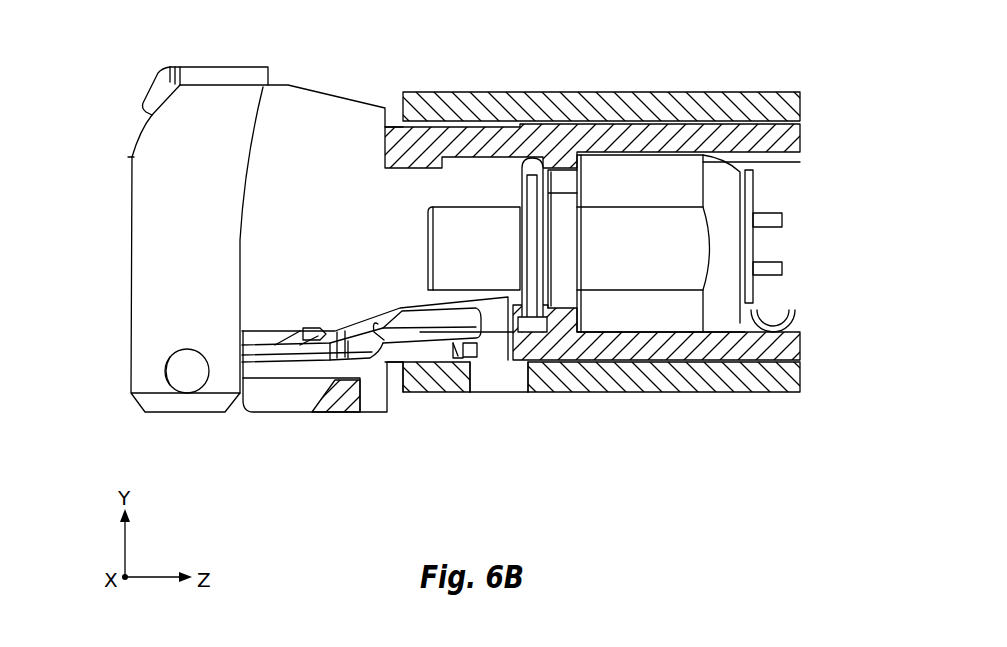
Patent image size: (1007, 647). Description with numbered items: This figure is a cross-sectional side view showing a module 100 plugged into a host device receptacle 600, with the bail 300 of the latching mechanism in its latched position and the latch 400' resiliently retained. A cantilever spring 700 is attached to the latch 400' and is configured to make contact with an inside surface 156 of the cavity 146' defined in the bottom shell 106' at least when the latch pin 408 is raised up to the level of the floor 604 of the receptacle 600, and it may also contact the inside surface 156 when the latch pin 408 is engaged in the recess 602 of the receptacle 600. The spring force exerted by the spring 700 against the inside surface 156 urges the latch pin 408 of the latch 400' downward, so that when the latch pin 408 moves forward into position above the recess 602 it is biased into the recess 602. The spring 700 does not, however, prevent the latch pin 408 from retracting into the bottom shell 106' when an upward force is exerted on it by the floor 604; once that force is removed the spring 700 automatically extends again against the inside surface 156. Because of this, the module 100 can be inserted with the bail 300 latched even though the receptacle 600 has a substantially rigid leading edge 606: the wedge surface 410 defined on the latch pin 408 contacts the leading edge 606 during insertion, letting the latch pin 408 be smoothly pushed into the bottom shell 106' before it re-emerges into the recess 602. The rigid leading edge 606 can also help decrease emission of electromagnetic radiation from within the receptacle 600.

The bail 300 is at (134, 113).
The cantilever spring 700 is at (318, 330).
The inside surface 156 is at (337, 330).
The cavity 146' is at (293, 340).
The latch 400' is at (331, 382).
The bottom shell 106' is at (556, 293).
The receptacle 600 is at (808, 104).
The recess 602 is at (500, 390).
The floor 604 is at (434, 362).
The substantially rigid leading edge 606 is at (417, 362).
The latch pin 408 is at (459, 360).
The wedge surface 410 is at (474, 336).
The connector 100 is at (845, 228).